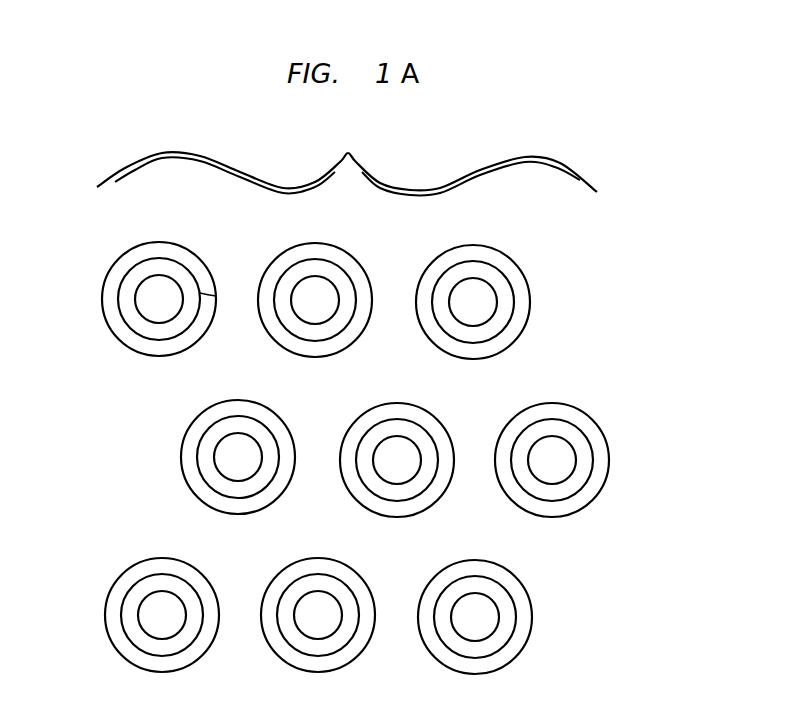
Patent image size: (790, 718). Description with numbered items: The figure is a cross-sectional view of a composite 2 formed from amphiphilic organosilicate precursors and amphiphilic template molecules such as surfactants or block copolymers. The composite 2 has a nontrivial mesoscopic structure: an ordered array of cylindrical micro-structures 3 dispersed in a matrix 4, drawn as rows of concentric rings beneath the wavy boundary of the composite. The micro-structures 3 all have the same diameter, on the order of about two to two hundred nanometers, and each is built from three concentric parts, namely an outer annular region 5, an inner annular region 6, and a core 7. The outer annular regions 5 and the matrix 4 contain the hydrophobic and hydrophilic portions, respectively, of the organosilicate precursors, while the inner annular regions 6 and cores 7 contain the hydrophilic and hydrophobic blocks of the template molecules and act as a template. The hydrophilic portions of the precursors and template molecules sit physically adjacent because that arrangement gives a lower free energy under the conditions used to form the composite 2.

The composite 2 is at (347, 157).
The cylindrical micro-structures 3 is at (374, 452).
The matrix 4 is at (398, 353).
The outer annular regions 5 is at (357, 261).
The inner annular regions 6 is at (312, 260).
The cores 7 is at (312, 312).